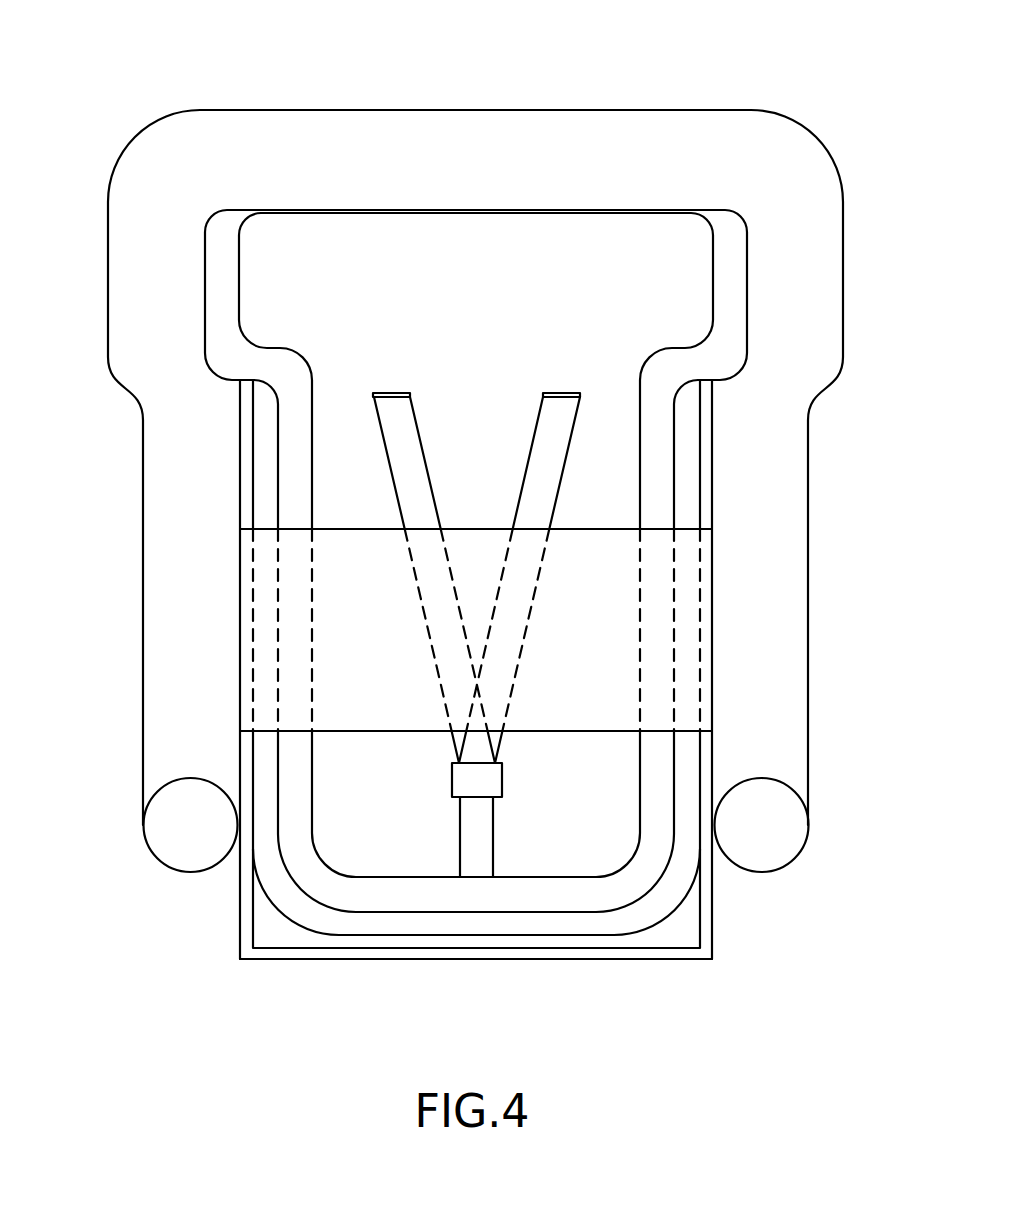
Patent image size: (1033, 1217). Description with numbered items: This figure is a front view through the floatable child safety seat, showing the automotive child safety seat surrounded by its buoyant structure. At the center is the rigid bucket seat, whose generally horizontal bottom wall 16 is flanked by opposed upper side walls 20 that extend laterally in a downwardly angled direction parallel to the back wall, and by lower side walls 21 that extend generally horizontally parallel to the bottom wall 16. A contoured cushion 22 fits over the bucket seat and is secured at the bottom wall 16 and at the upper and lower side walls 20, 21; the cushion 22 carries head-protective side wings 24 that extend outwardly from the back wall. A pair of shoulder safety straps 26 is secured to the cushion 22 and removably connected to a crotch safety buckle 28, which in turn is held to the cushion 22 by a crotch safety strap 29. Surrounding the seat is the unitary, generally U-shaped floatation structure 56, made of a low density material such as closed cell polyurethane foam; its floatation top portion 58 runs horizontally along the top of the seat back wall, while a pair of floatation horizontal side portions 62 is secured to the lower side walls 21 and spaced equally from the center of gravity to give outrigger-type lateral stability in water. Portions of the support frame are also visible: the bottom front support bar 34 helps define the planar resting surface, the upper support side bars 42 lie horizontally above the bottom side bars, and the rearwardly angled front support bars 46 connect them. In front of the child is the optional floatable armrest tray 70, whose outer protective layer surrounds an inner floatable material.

The bucket seat bottom wall 16 is at (377, 922).
The bucket seat upper side walls 20 is at (247, 402).
The bucket seat lower side walls 21 is at (263, 757).
The cushion 22 is at (419, 897).
The head-protective side wings 24 is at (220, 302).
The shoulder safety straps 26 is at (407, 468).
The crotch safety buckle 28 is at (457, 782).
The crotch safety strap 29 is at (483, 843).
The bottom front support bar 34 is at (567, 953).
The upper support side bars 42 is at (245, 498).
The rearwardly angled front support bars 46 is at (245, 913).
The floatation structure 56 is at (756, 109).
The floatation top portion 58 is at (445, 127).
The floatation horizontal side portions 62 is at (160, 837).
The floatable armrest tray 70 is at (561, 645).